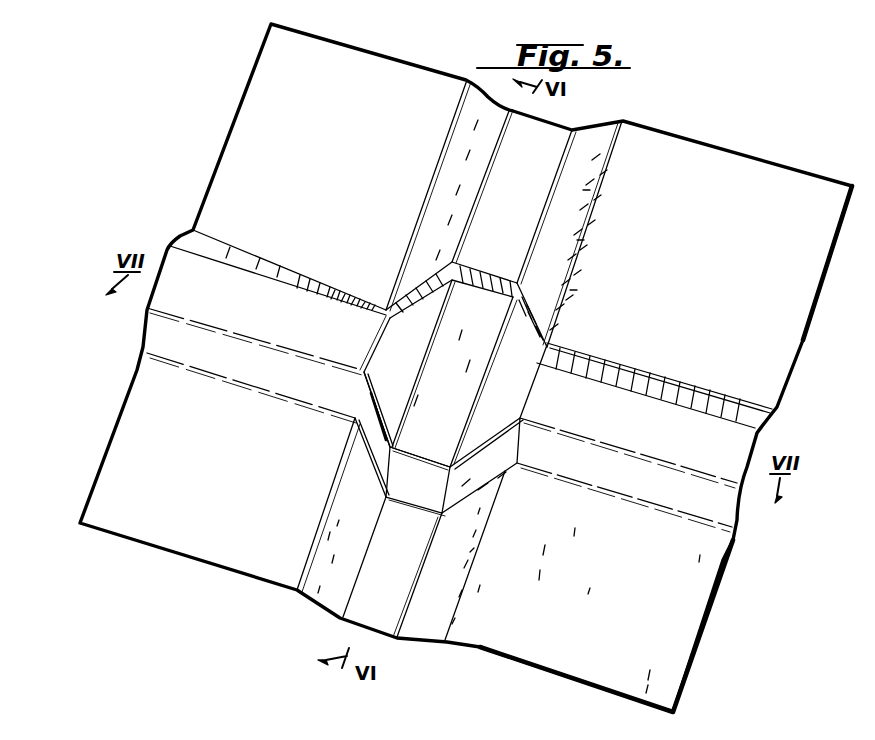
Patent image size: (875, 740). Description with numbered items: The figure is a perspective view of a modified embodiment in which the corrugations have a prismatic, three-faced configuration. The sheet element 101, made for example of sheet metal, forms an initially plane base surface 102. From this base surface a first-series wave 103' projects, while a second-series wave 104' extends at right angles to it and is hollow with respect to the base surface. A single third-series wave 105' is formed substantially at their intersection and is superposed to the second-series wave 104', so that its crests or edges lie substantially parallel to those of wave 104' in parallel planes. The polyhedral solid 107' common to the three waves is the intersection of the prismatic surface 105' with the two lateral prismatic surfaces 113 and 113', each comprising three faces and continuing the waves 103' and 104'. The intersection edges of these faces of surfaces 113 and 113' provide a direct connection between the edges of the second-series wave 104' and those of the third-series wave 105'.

The sheet element 101 is at (197, 531).
The base surface 102 is at (589, 610).
The first-series wave 103' is at (644, 437).
The second-series wave 104' is at (504, 213).
The third-series wave 105' is at (438, 373).
The polyhedral solid 107' is at (266, 349).
The lateral prismatic surface 113 is at (419, 481).
The lateral prismatic surface 113' is at (457, 271).